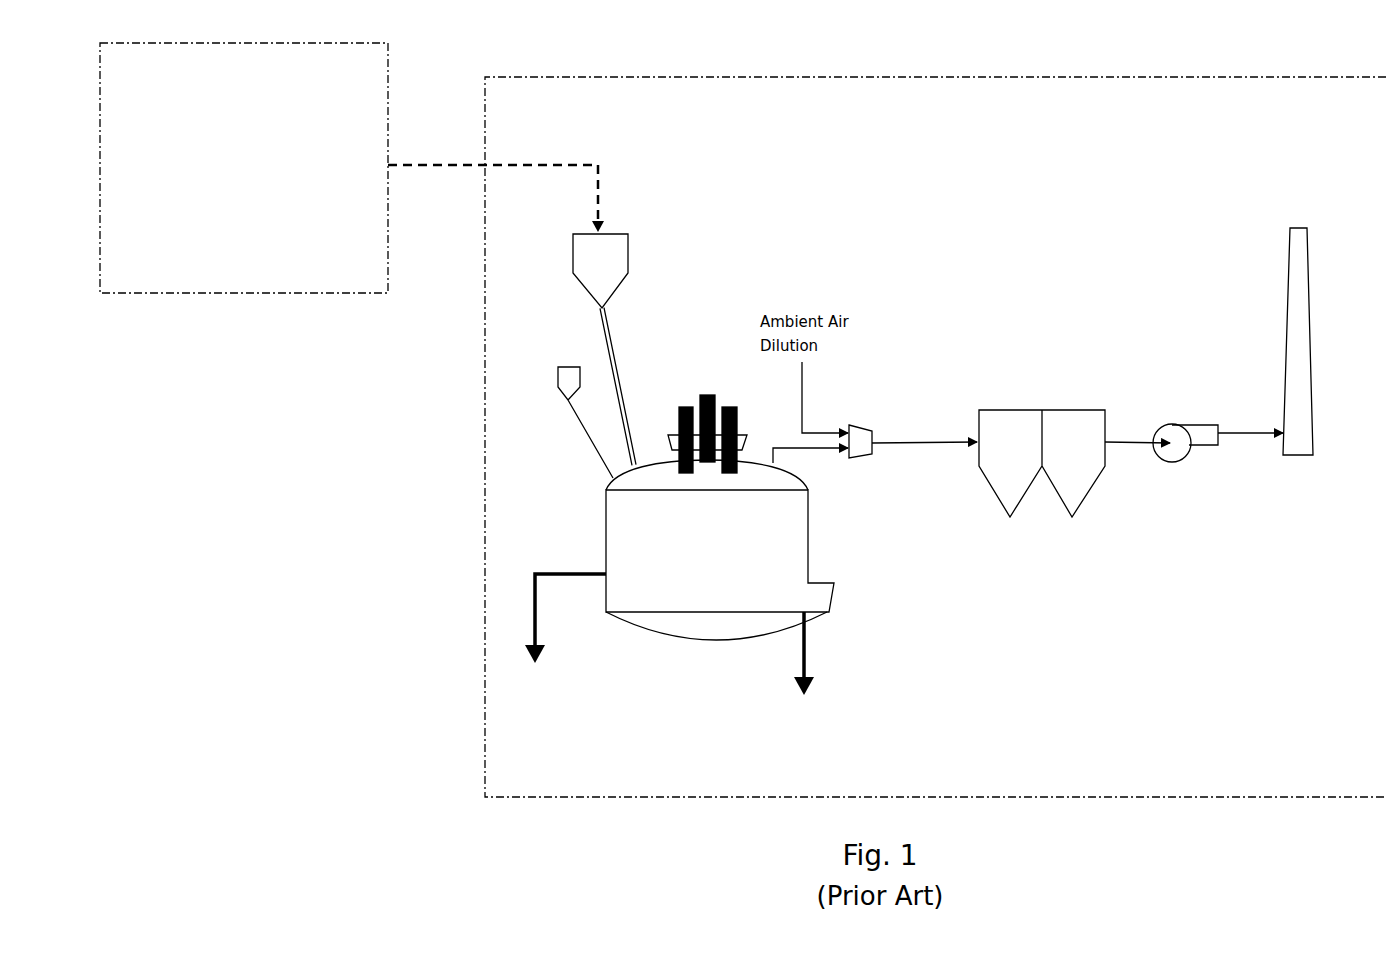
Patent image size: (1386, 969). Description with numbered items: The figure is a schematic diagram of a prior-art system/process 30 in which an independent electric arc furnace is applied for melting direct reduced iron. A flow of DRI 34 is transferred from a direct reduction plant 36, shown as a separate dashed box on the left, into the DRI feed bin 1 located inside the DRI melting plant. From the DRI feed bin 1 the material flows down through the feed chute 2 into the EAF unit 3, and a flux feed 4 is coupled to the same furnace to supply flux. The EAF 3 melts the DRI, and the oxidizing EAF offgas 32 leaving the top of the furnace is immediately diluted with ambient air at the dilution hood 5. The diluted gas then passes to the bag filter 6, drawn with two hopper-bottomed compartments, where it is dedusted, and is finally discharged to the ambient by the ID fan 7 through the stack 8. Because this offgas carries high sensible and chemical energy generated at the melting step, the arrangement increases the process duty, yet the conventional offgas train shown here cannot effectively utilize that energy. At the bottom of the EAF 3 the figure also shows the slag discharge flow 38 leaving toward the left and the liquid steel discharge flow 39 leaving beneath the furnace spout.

The direct reduction plant 36 is at (231, 33).
The system/process 30 is at (717, 58).
The flow of DRI 34 is at (568, 150).
The DRI feed bin 1 is at (631, 243).
The feed chute 2 is at (644, 352).
The flux feed 4 is at (551, 392).
The EAF unit 3 is at (720, 517).
The EAF offgas 32 is at (803, 456).
The dilution hood 5 is at (894, 403).
The bag filter 6 is at (1067, 392).
The ID fan 7 is at (1175, 411).
The stack 8 is at (1281, 304).
The slag discharge flow 38 is at (521, 608).
The liquid steel discharge flow 39 is at (819, 664).